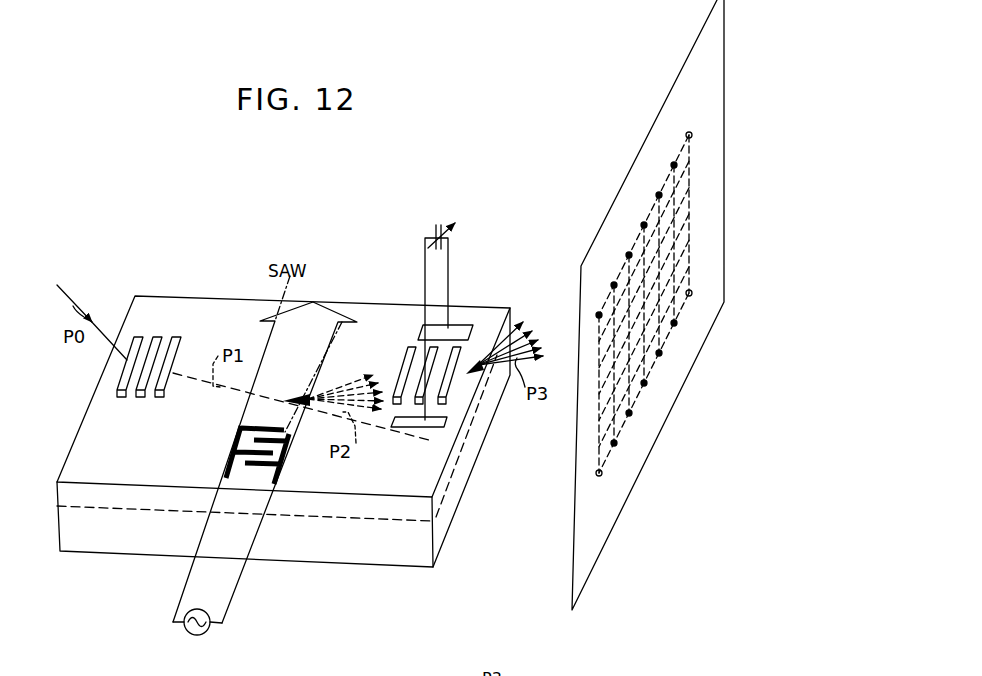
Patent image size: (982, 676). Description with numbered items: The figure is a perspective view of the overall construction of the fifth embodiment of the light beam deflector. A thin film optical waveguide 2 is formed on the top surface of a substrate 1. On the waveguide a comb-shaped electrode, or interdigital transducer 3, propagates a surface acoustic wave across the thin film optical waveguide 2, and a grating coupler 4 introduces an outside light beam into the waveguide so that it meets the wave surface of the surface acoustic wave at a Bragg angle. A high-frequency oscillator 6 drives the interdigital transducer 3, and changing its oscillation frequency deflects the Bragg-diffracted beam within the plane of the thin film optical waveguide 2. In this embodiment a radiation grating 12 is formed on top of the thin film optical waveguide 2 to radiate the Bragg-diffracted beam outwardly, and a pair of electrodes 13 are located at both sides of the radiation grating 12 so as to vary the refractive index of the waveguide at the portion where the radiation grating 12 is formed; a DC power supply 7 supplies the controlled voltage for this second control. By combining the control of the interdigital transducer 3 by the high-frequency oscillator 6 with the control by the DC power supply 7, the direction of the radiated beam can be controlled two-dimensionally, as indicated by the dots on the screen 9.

The substrate 1 is at (143, 537).
The thin film optical waveguide 2 is at (57, 489).
The comb-shaped electrode (IDT) 3 is at (229, 462).
The grating coupler 4 is at (179, 338).
The high-frequency oscillator 6 is at (202, 638).
The DC power supply 7 is at (437, 236).
The screen 9 is at (592, 556).
The radiation grating 12 is at (396, 364).
The electrodes 13 is at (462, 326).